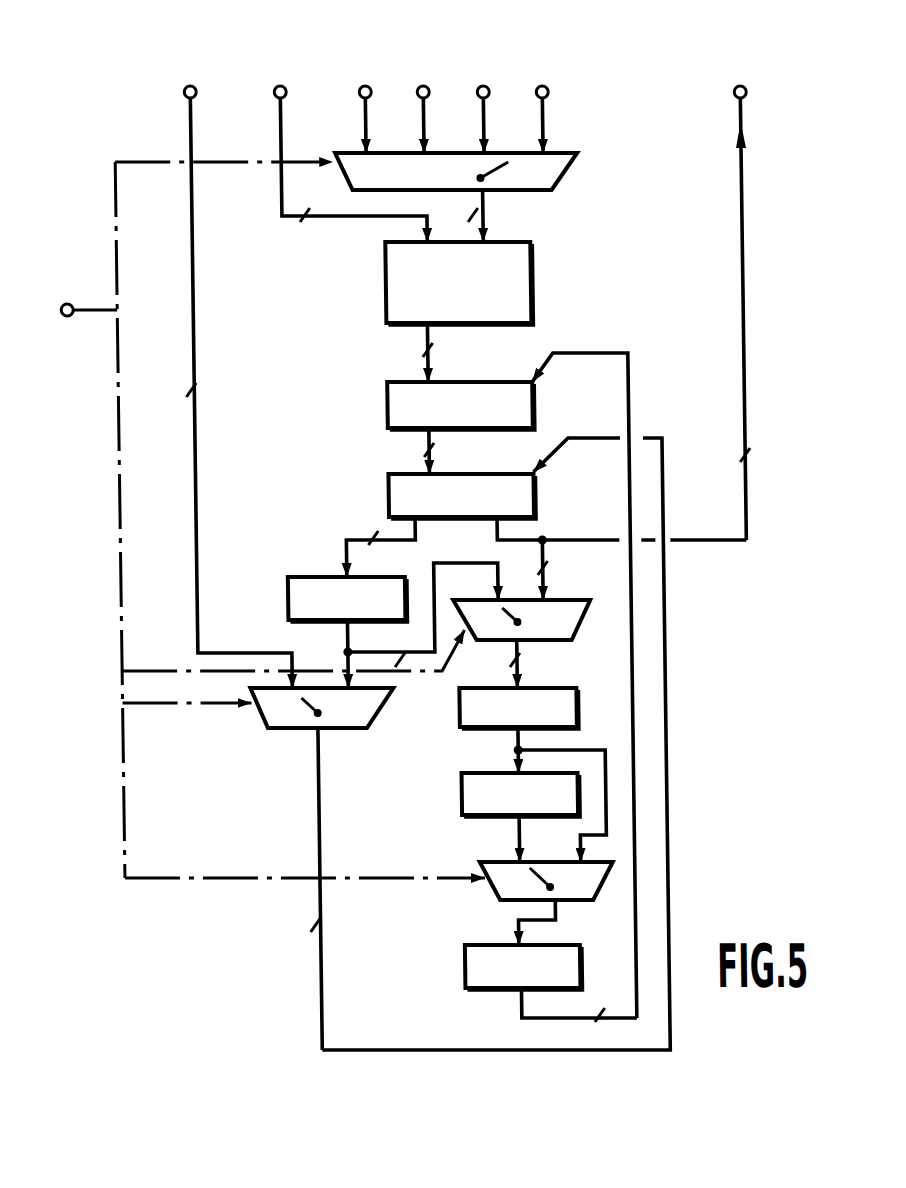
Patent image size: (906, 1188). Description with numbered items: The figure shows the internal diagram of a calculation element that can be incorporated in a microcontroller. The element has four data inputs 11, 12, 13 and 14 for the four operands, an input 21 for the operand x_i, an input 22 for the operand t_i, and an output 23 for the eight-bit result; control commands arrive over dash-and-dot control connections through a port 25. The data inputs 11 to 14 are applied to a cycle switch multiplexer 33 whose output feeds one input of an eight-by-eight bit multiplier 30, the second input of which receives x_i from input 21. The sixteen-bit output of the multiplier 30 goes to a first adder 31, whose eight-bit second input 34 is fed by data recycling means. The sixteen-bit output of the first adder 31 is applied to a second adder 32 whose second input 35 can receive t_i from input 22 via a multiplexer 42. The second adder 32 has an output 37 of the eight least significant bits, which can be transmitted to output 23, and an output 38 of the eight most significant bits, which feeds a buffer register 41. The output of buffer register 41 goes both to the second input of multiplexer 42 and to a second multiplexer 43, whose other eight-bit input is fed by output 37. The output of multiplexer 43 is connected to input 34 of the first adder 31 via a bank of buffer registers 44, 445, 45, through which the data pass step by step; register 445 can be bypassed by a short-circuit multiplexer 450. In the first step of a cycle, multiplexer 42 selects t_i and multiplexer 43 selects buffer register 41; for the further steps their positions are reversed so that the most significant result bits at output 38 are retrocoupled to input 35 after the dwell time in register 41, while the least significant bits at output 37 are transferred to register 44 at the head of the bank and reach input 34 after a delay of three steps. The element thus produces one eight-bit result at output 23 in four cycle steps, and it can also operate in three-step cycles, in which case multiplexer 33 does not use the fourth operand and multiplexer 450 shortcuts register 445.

The input 11 is at (542, 86).
The input 12 is at (487, 86).
The input 13 is at (427, 86).
The input 14 is at (367, 86).
The input 21 is at (283, 86).
The input 22 is at (190, 86).
The output 23 is at (741, 86).
The port 25 is at (50, 262).
The multiplier 30 is at (527, 281).
The first adder 31 is at (382, 410).
The second adder 32 is at (382, 496).
The cycle switch multiplexer 33 is at (550, 190).
The second input of the first adder 34 is at (521, 378).
The second input of the second adder 35 is at (527, 470).
The output of the 8 least significant bits 37 is at (492, 528).
The output of the 8 most significant bits 38 is at (402, 527).
The buffer register 41 is at (282, 598).
The multiplexer 42 is at (256, 718).
The second multiplexer 43 is at (574, 612).
The buffer register 44 is at (450, 701).
The register 445 is at (451, 795).
The short-circuit multiplexer 450 is at (489, 898).
The buffer register 45 is at (452, 966).